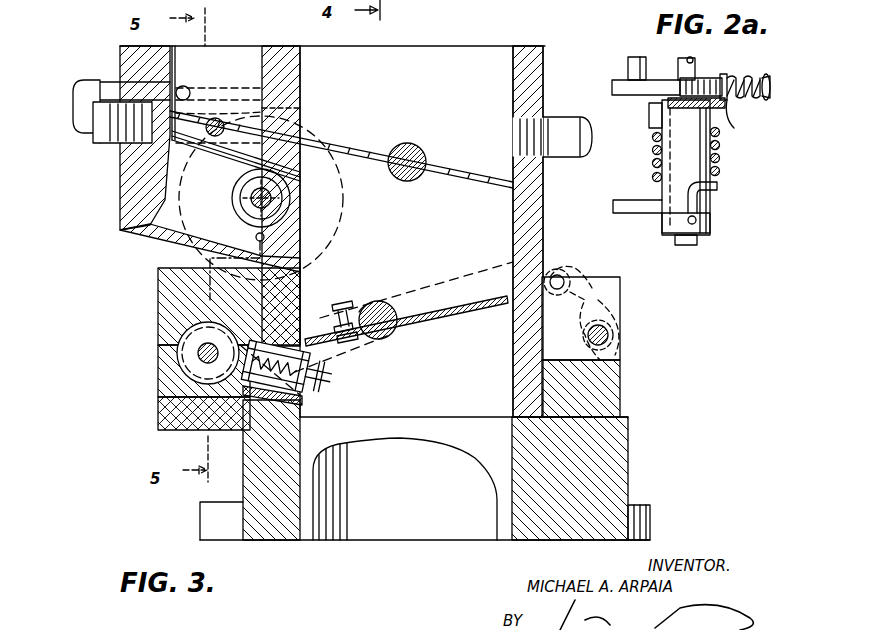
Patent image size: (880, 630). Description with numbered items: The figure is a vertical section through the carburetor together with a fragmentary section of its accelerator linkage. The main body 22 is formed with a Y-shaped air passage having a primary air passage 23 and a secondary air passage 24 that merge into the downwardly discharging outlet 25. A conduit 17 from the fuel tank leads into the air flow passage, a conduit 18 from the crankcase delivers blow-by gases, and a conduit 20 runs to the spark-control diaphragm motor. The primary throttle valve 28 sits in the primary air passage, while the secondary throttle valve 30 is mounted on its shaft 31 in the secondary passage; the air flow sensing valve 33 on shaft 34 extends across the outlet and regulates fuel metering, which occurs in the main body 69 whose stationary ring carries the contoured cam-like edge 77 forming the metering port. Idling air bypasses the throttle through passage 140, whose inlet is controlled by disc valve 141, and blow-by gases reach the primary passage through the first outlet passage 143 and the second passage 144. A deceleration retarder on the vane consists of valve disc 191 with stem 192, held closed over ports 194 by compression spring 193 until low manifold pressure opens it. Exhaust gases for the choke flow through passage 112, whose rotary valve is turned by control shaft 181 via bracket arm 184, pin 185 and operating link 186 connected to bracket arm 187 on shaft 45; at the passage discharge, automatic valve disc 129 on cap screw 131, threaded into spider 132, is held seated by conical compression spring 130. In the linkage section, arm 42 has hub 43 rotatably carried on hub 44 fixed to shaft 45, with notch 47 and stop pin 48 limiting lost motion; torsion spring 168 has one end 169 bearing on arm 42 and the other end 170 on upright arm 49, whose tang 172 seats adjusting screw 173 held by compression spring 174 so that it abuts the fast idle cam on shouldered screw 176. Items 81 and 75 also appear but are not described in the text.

In FIG. 3, the conduit 17 is at (565, 117).
In FIG. 3, the conduit 18 is at (92, 82).
In FIG. 3, the conduit 20 is at (112, 143).
In FIG. 3, the main body 22 is at (118, 208).
In FIG. 3, the primary air passage 23 is at (180, 60).
In FIG. 3, the secondary air passage 24 is at (300, 88).
In FIG. 3, the outlet 25 is at (512, 433).
In FIG. 3, the primary throttle valve 28 is at (215, 160).
In FIG. 3, the secondary throttle valve 30 is at (475, 184).
In FIG. 3, the shaft 31 is at (418, 177).
In FIG. 3, the air flow sensing valve 33 is at (453, 312).
In FIG. 3, the shaft 34 is at (396, 334).
In FIG. 3, the shaft 45 is at (612, 332).
In FIG. 2A, the shaft 45 is at (692, 62).
In FIG. 3, the main body 69 is at (333, 250).
In FIG. 3, the cam-like edge 77 is at (242, 185).
In FIG. 3, the pivot shaft 81 is at (272, 200).
In FIG. 3, the passage 112 is at (220, 290).
In FIG. 3, the automatic valve disc 129 is at (305, 402).
In FIG. 3, the conical compression spring 130 is at (310, 380).
In FIG. 3, the cap screw 131 is at (327, 376).
In FIG. 3, the spider 132 is at (280, 424).
In FIG. 3, the passage 140 is at (300, 108).
In FIG. 3, the disc valve 141 is at (288, 46).
In FIG. 3, the first outlet passage 143 is at (190, 90).
In FIG. 3, the second passage 144 is at (238, 85).
In FIG. 3, the control shaft 181 is at (180, 354).
In FIG. 3, the bracket arm 184 is at (170, 375).
In FIG. 3, the pin 185 is at (160, 412).
In FIG. 3, the operating link 186 is at (455, 275).
In FIG. 3, the bracket arm 187 is at (618, 292).
In FIG. 3, the valve disc 191 is at (352, 344).
In FIG. 3, the stem 192 is at (346, 305).
In FIG. 3, the compression spring 193 is at (363, 305).
In FIG. 3, the ports 194 is at (328, 333).
In FIG. 2A, the arm 42 is at (630, 213).
In FIG. 2A, the hub 43 is at (662, 188).
In FIG. 2A, the hub 44 is at (670, 157).
In FIG. 2A, the notch 47 is at (662, 235).
In FIG. 2A, the stop pin 48 is at (695, 245).
In FIG. 2A, the arm 49 is at (730, 114).
In FIG. 2A, the upper arm 75 is at (655, 80).
In FIG. 2A, the torsion spring 168 is at (720, 172).
In FIG. 2A, the spring end 169 is at (715, 194).
In FIG. 2A, the spring end 170 is at (648, 118).
In FIG. 2A, the tang 172 is at (728, 76).
In FIG. 2A, the adjusting screw 173 is at (768, 100).
In FIG. 2A, the compression spring 174 is at (745, 102).
In FIG. 2A, the shouldered screw 176 is at (628, 62).